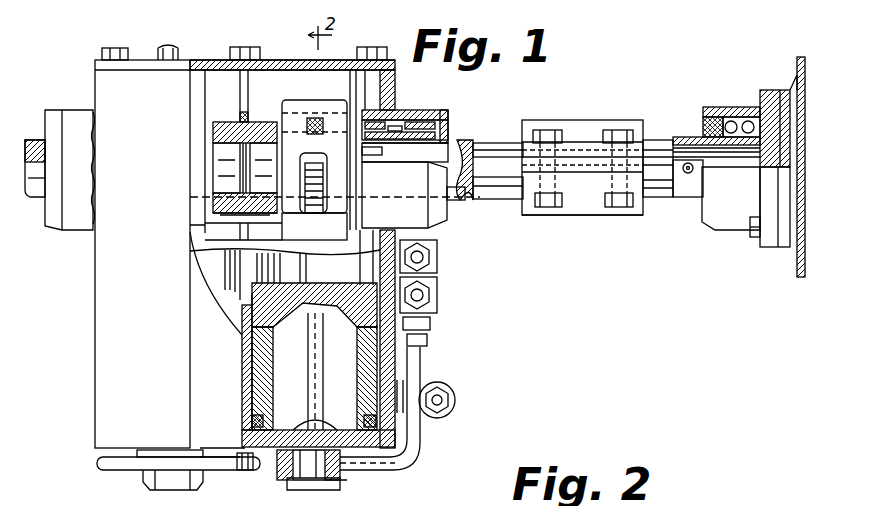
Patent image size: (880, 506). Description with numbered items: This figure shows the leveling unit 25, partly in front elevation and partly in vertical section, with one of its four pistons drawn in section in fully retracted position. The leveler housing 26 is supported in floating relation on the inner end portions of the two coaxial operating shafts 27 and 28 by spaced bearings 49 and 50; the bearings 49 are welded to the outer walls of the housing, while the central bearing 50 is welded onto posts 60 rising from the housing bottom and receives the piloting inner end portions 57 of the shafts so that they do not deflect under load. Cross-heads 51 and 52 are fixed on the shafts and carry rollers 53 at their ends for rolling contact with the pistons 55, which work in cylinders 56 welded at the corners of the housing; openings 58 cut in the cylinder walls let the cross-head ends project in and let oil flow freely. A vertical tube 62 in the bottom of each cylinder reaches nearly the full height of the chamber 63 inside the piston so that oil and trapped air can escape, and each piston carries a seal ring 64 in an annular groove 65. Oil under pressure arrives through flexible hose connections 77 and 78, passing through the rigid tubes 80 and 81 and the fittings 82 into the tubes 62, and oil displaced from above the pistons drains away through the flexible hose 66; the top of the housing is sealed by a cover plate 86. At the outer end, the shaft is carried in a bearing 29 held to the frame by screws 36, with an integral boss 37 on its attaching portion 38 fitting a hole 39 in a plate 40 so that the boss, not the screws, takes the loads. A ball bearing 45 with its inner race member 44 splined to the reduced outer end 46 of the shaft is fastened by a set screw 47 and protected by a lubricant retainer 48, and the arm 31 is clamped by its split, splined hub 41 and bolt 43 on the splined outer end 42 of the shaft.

The leveling unit 25 is at (86, 297).
The leveler housing 26 is at (108, 372).
The operating shaft 27 is at (37, 204).
The operating shaft 28 is at (464, 199).
The bearing 29 is at (737, 231).
The arm 31 is at (598, 120).
The screw 36 is at (757, 239).
The boss 37 is at (782, 150).
The attaching portion 38 is at (771, 90).
The hole 39 is at (781, 92).
The plate 40 is at (795, 247).
The hub 41 is at (570, 218).
The splined outer end 42 is at (660, 199).
The bolt 43 is at (548, 133).
The inner race member 44 is at (691, 199).
The ball bearing 45 is at (733, 116).
The splined reduced outer end 46 is at (720, 152).
The set screw 47 is at (683, 137).
The lubricant retainer 48 is at (704, 121).
The bearing 49 is at (72, 112).
The bearing 50 is at (253, 165).
The cross-head 51 is at (195, 100).
The cross-head 52 is at (331, 110).
The roller 53 is at (318, 188).
The piston 55 is at (292, 290).
The cylinder 56 is at (370, 96).
The piloting inner end portion 57 is at (222, 165).
The opening 58 is at (318, 230).
The post 60 is at (243, 236).
The vertical tube 62 is at (313, 368).
The chamber 63 is at (352, 293).
The seal ring 64 is at (252, 421).
The annular groove 65 is at (268, 420).
The flexible hose 66 is at (456, 398).
The flexible hose connection 77 is at (439, 293).
The flexible hose connection 78 is at (439, 257).
The rigid tube connection 80 is at (259, 472).
The rigid tube 81 is at (127, 472).
The fitting 82 is at (281, 481).
The cover plate 86 is at (138, 62).